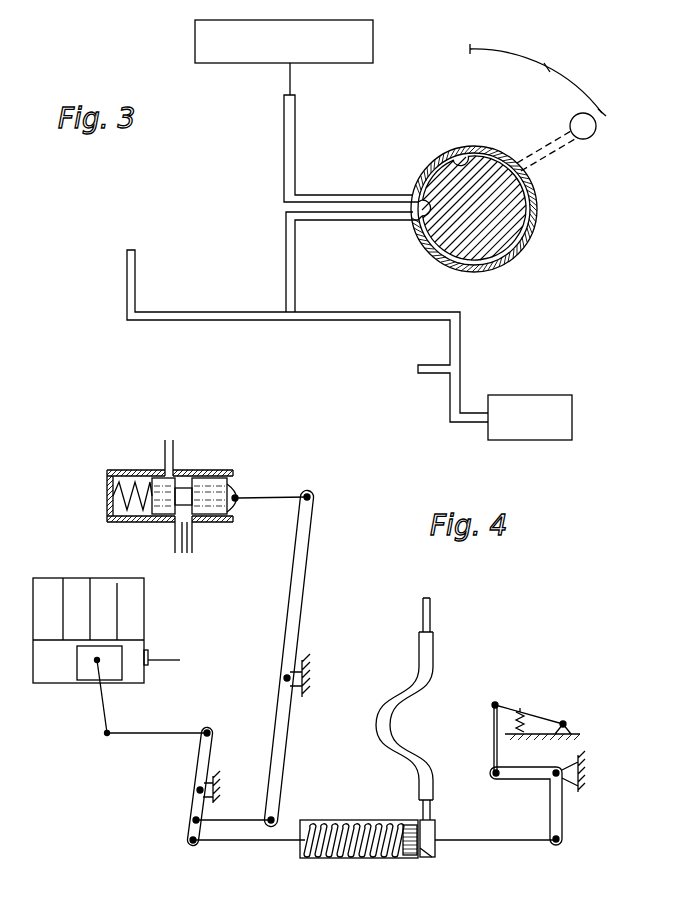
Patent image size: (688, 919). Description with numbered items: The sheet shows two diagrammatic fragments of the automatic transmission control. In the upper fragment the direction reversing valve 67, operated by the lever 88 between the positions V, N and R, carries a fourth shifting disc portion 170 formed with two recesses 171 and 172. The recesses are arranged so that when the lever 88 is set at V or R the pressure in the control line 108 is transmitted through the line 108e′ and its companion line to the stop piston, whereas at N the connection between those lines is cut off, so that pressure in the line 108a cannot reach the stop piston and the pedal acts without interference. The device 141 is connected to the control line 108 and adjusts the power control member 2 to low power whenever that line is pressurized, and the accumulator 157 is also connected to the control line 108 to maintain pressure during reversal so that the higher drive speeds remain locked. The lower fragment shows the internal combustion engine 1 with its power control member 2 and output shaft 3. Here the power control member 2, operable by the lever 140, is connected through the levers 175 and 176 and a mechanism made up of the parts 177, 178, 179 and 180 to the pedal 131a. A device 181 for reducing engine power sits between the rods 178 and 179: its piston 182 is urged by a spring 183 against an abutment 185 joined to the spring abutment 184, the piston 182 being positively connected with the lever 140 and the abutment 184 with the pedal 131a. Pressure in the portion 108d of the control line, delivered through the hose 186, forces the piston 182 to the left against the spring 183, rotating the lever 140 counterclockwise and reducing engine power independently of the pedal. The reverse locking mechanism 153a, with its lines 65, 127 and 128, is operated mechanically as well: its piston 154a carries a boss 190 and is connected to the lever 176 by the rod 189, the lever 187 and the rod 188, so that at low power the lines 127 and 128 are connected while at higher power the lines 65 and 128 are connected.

In FIG. 3, the device 141 is at (284, 41).
In FIG. 3, the line 108e′ is at (293, 248).
In FIG. 3, the line 108a is at (133, 270).
In FIG. 3, the control line 108 is at (335, 312).
In FIG. 3, the accumulator 157 is at (530, 417).
In FIG. 3, the fourth shifting disc portion 170 is at (513, 216).
In FIG. 3, the recess 171 is at (458, 155).
In FIG. 3, the recess 172 is at (411, 185).
In FIG. 3, the direction reversing valve 67 is at (515, 269).
In FIG. 3, the lever 88 is at (553, 140).
In FIG. 4, the reverse locking mechanism 153a is at (108, 471).
In FIG. 4, the line 65 is at (176, 447).
In FIG. 4, the piston 154a is at (215, 490).
In FIG. 4, the boss 190 is at (240, 494).
In FIG. 4, the rod 189 is at (283, 497).
In FIG. 4, the lever 187 is at (296, 612).
In FIG. 4, the internal combustion engine 1 is at (50, 668).
In FIG. 4, the power control member 2 is at (88, 668).
In FIG. 4, the output shaft 3 is at (172, 664).
In FIG. 4, the lever 140 is at (103, 713).
In FIG. 4, the mechanism element 180 is at (149, 735).
In FIG. 4, the lever 176 is at (211, 746).
In FIG. 4, the rod 188 is at (233, 820).
In FIG. 4, the rod 179 is at (240, 843).
In FIG. 4, the device for reducing the power of the engine 181 is at (343, 818).
In FIG. 4, the spring abutment 184 is at (301, 852).
In FIG. 4, the spring 183 is at (339, 853).
In FIG. 4, the piston 182 is at (409, 856).
In FIG. 4, the abutment 185 is at (427, 853).
In FIG. 4, the rod 178 is at (487, 842).
In FIG. 4, the hose 186 is at (401, 694).
In FIG. 4, the portion of control line 108d is at (431, 611).
In FIG. 4, the pedal 131a is at (536, 709).
In FIG. 4, the mechanism element 177 is at (491, 737).
In FIG. 4, the lever 175 is at (553, 808).
In FIG. 4, the line 128 is at (176, 545).
In FIG. 4, the line 127 is at (192, 545).